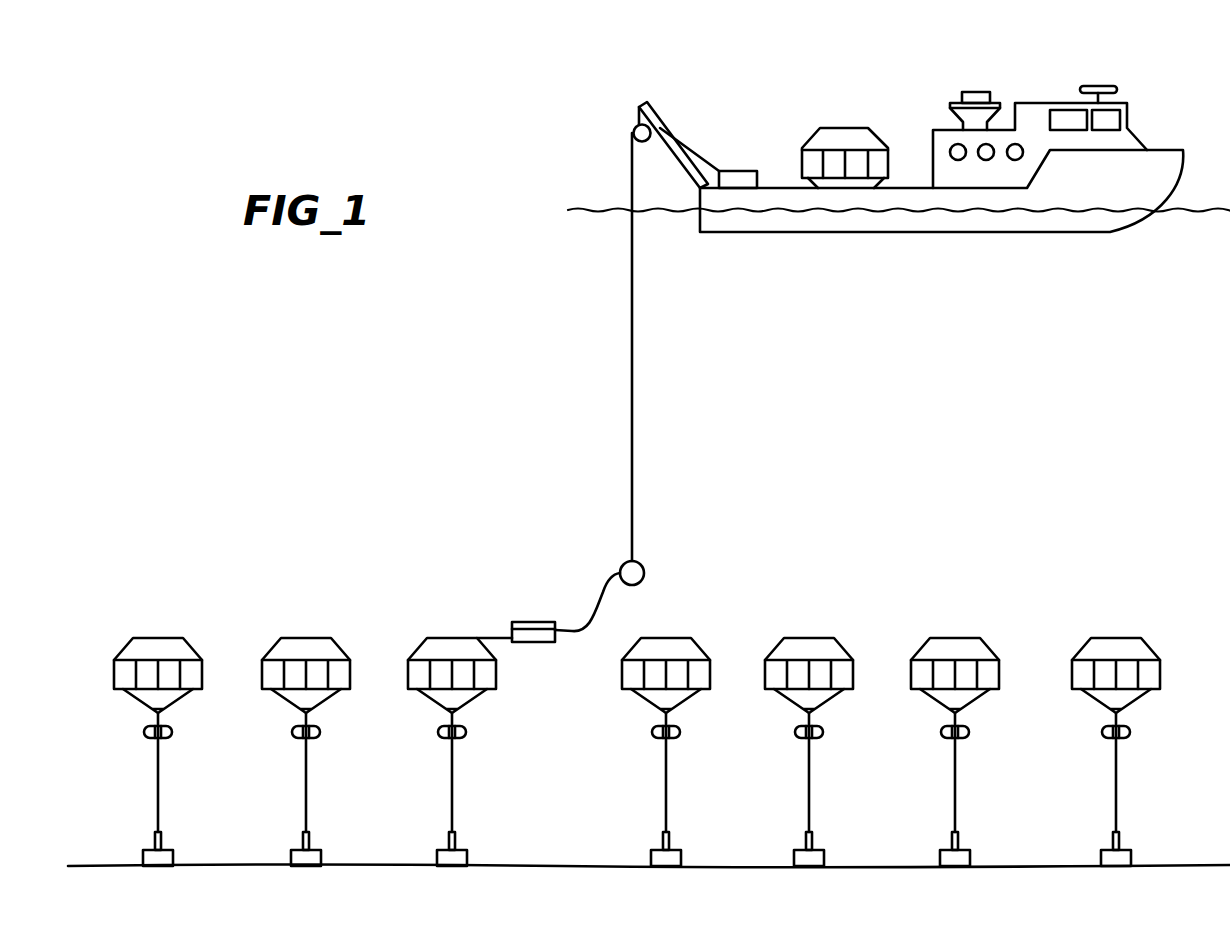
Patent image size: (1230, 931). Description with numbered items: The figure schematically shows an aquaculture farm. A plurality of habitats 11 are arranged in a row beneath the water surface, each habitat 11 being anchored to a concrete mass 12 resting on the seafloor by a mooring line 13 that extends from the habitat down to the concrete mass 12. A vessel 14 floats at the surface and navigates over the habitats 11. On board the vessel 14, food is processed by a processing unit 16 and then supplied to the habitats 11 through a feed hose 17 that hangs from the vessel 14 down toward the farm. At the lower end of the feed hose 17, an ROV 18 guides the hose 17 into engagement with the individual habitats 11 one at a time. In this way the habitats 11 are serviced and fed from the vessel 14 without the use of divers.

The habitat 11 is at (849, 136).
The concrete mass 12 is at (292, 850).
The mooring line 13 is at (452, 773).
The vessel 14 is at (1147, 167).
The processing unit 16 is at (737, 176).
The feed hose 17 is at (634, 396).
The ROV 18 is at (527, 625).